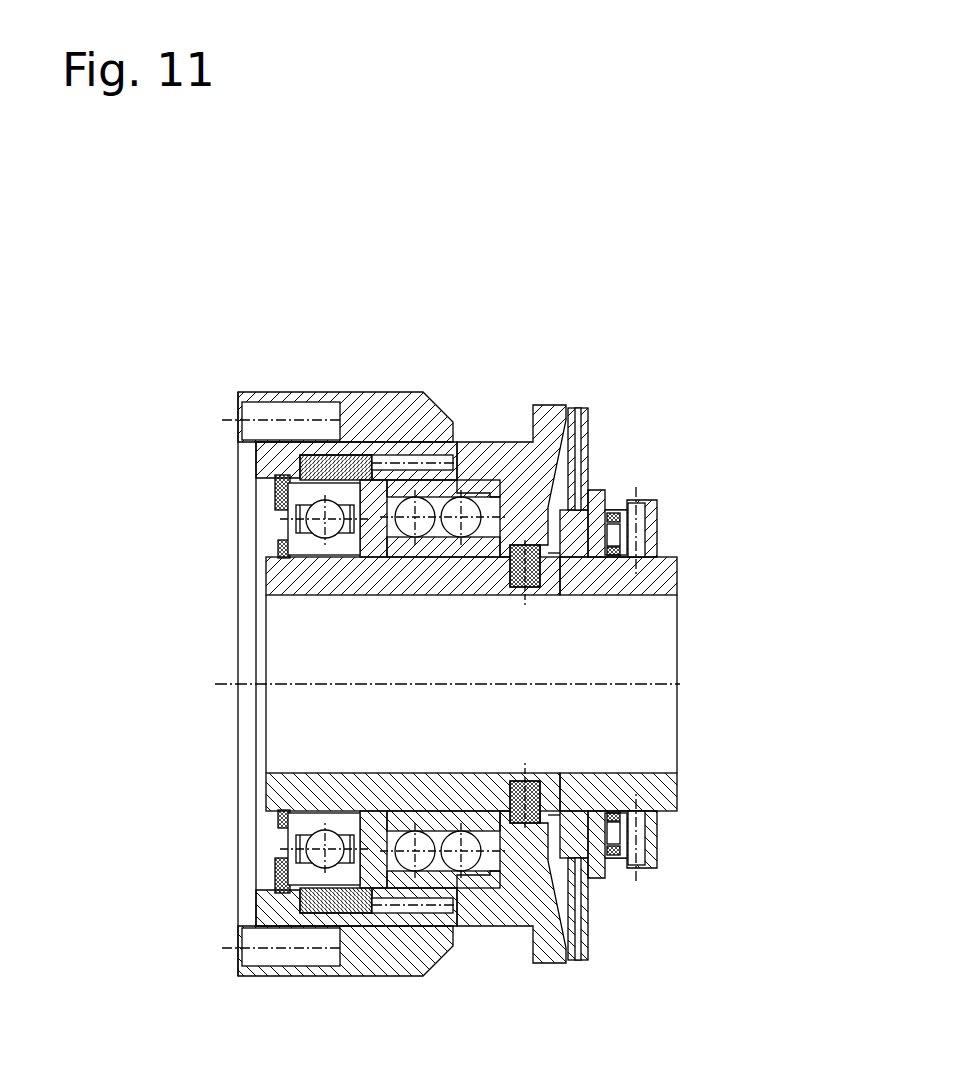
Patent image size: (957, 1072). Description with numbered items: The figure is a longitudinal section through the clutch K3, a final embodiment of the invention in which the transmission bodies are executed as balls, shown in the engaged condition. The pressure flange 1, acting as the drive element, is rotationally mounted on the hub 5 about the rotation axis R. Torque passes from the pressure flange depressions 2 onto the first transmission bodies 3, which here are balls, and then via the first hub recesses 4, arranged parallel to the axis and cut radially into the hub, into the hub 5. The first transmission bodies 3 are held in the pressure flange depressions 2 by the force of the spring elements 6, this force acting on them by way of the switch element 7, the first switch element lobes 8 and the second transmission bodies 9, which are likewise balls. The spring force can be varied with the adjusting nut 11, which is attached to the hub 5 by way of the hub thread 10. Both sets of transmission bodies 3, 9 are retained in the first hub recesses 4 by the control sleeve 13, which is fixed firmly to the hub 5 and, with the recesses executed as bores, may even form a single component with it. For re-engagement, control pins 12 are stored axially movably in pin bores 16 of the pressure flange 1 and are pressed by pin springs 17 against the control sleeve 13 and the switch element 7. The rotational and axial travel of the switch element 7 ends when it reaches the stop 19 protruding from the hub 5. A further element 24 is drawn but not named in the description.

The pressure flange 1 is at (257, 460).
The pressure flange depressions 2 is at (350, 519).
The first transmission bodies 3 is at (393, 453).
The first hub recesses 4 is at (452, 480).
The hub 5 is at (307, 575).
The spring elements 6 is at (588, 472).
The switch element 7 is at (647, 420).
The first switch element lobes 8 is at (573, 477).
The second transmission bodies 9 is at (533, 490).
The hub thread 10 is at (640, 560).
The adjusting nut 11 is at (658, 525).
The control pins 12 is at (393, 450).
The control sleeve 13 is at (455, 480).
The pin bores 16 is at (300, 445).
The pin springs 17 is at (312, 455).
The stop 19 is at (548, 582).
The seal ring 24 is at (655, 820).
The rotation axis R is at (285, 684).
The clutch K3 is at (645, 418).